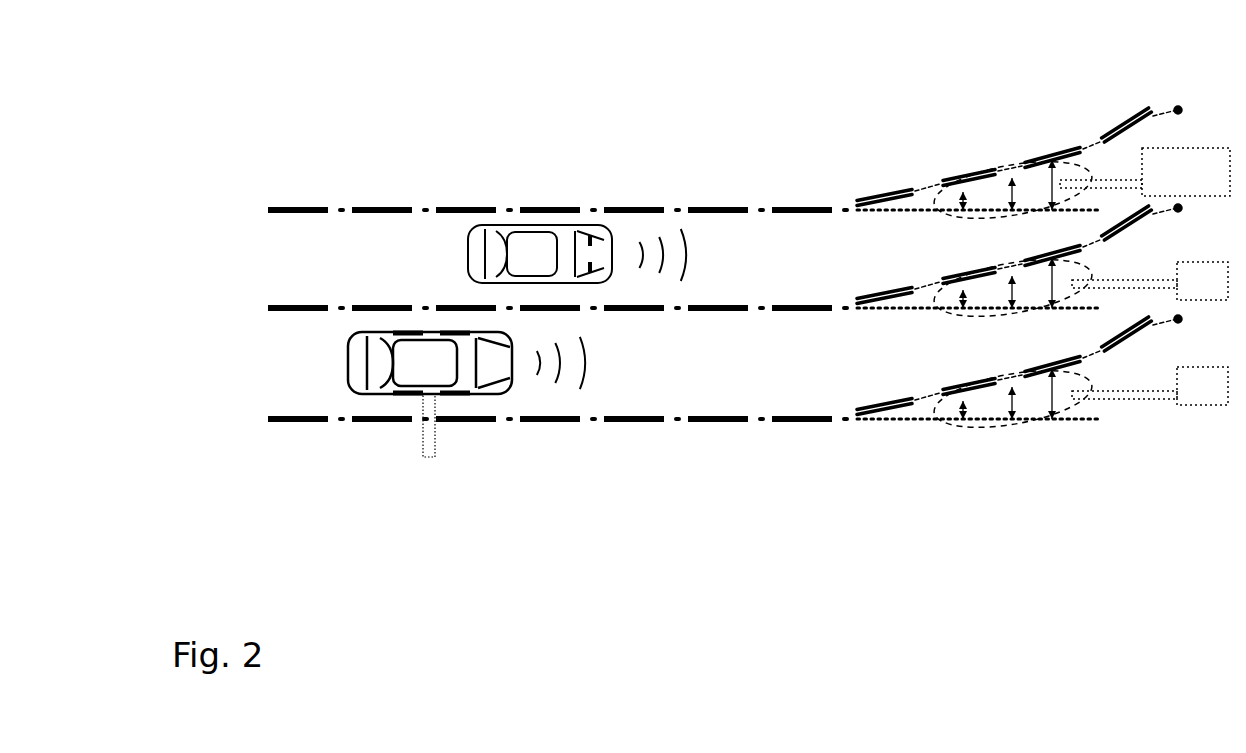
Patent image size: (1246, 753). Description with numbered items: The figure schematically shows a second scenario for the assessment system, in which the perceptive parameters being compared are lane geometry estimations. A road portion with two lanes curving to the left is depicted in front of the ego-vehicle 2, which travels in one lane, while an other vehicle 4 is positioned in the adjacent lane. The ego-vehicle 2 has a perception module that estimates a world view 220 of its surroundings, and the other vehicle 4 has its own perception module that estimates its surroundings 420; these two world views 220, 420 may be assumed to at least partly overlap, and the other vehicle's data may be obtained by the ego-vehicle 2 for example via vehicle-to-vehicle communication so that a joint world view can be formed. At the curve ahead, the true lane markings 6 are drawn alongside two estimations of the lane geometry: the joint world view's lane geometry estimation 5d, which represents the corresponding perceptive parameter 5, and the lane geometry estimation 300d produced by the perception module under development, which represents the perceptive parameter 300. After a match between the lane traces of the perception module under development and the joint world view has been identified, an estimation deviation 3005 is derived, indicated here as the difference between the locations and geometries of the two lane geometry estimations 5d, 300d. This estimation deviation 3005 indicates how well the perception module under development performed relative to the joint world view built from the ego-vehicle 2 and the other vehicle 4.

The ego-vehicle 2 is at (360, 392).
The other vehicle 4 is at (468, 243).
The world view 220 is at (617, 383).
The surroundings 420 is at (710, 228).
The perceptive parameter 300 is at (712, 345).
The lane geometry estimation 300d is at (900, 213).
The estimation deviation 3005 is at (962, 163).
The corresponding perceptive parameter 5 is at (1039, 228).
The lane geometry estimation 5d is at (1160, 120).
The true lane markings 6 is at (1057, 146).